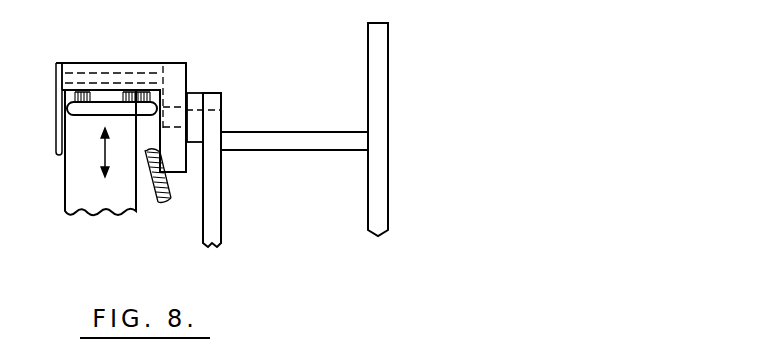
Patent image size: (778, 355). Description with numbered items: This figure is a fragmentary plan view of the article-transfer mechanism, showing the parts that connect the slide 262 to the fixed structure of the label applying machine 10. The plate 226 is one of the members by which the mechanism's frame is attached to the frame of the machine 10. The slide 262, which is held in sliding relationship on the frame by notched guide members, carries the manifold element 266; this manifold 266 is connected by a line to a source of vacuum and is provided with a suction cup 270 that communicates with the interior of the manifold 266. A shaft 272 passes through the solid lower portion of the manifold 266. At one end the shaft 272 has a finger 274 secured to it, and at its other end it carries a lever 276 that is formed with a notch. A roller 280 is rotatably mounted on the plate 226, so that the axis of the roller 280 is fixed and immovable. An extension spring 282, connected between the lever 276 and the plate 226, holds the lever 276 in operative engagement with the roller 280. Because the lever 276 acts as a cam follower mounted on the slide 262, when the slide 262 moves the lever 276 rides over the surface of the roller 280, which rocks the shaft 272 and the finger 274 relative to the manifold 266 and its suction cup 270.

The label applying machine 10 is at (389, 127).
The plate 226 is at (221, 190).
The slide 262 is at (76, 183).
The manifold element 266 is at (128, 63).
The suction cup 270 is at (93, 113).
The shaft 272 is at (83, 63).
The finger 274 is at (56, 116).
The lever 276 is at (180, 88).
The roller 280 is at (222, 110).
The extension spring 282 is at (150, 206).